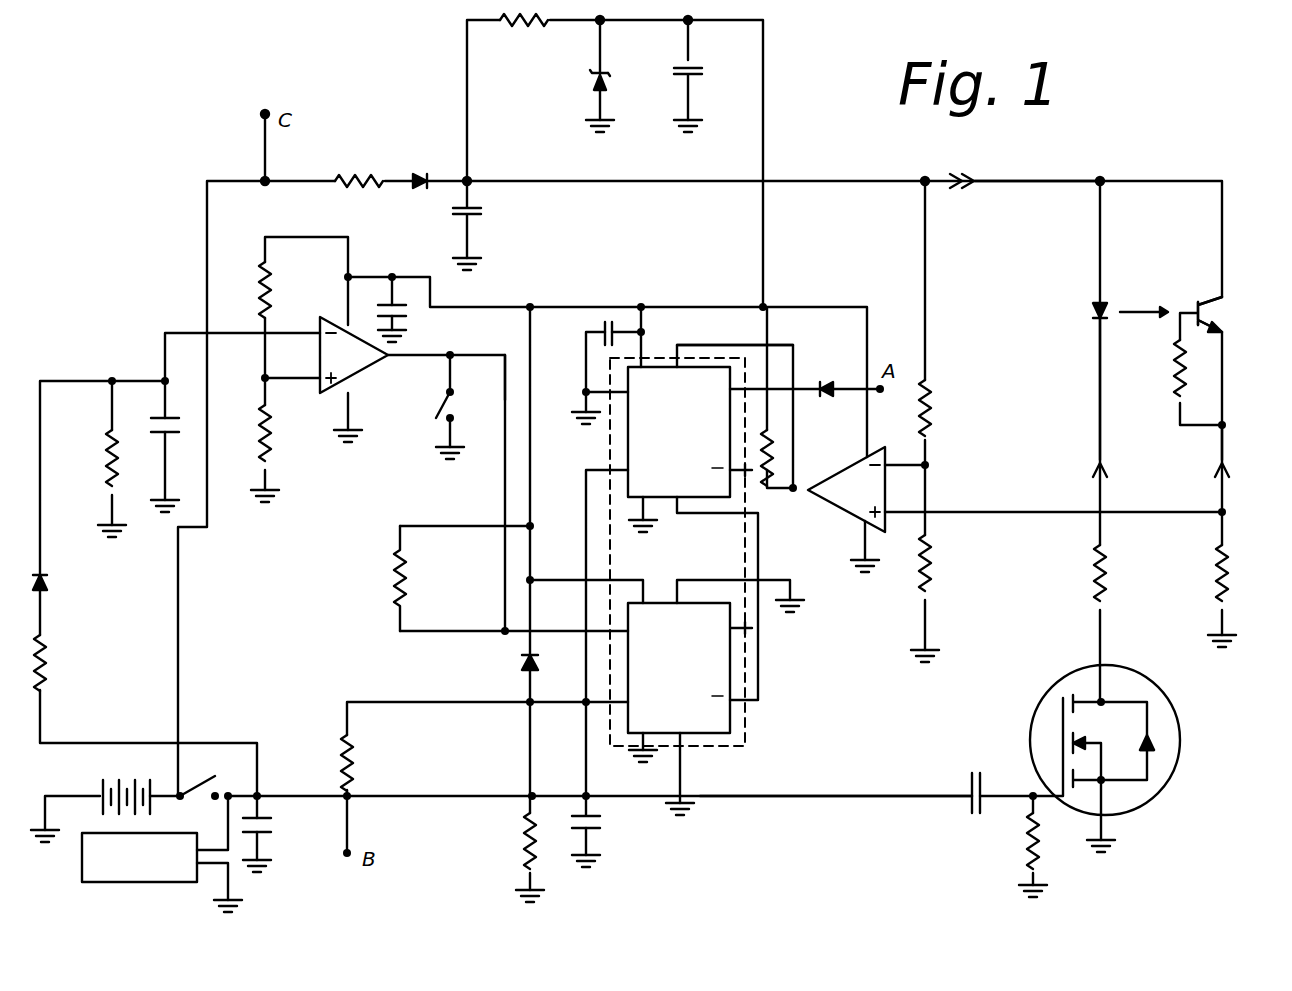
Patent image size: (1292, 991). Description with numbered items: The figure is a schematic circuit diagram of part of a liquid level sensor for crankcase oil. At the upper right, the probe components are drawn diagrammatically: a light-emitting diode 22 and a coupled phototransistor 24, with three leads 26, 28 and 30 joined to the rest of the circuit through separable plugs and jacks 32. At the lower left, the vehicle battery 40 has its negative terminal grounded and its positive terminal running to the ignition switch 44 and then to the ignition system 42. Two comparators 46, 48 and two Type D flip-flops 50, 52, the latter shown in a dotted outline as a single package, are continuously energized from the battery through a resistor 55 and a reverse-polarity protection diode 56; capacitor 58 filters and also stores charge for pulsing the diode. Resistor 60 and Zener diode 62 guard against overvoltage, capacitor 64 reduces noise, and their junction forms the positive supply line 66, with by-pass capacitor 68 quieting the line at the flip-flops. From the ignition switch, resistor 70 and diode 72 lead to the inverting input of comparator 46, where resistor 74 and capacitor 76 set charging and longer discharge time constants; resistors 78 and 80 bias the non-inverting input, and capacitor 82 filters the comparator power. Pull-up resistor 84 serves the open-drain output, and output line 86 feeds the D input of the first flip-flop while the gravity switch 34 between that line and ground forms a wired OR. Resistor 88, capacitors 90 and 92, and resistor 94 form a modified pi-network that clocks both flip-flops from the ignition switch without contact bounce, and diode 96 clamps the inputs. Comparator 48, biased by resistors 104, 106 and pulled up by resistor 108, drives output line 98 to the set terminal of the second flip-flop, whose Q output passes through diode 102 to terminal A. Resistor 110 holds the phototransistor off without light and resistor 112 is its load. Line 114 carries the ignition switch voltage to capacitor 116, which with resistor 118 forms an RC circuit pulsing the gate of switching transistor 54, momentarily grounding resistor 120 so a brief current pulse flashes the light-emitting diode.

The light-emitting diode 22 is at (1083, 305).
The phototransistor 24 is at (1226, 310).
The lead 26 is at (1225, 455).
The lead 28 is at (1098, 375).
The lead 30 is at (1017, 181).
The plugs and jacks 32 is at (985, 155).
The gravity switch 34 is at (455, 406).
The vehicle battery 40 is at (100, 790).
The ignition system 42 is at (132, 886).
The ignition switch 44 is at (205, 770).
The comparator 46 is at (360, 368).
The comparator 48 is at (835, 518).
The flip-flop 50 is at (690, 669).
The flip-flop 52 is at (681, 552).
The switching transistor 54 is at (1148, 688).
The resistor 55 is at (365, 178).
The diode 56 is at (427, 170).
The capacitor 58 is at (487, 213).
The resistor 60 is at (527, 40).
The Zener diode 62 is at (605, 72).
The capacitor 64 is at (702, 65).
The positive supply line 66 is at (770, 262).
The by-pass capacitor 68 is at (602, 320).
The resistor 70 is at (50, 668).
The diode 72 is at (50, 582).
The resistor 74 is at (106, 458).
The capacitor 76 is at (178, 422).
The resistor 78 is at (278, 285).
The resistor 80 is at (274, 440).
The capacitor 82 is at (410, 305).
The pull-up resistor 84 is at (382, 585).
The output line 86 is at (500, 350).
The resistor 88 is at (365, 767).
The capacitor 90 is at (275, 835).
The capacitor 92 is at (612, 824).
The resistor 94 is at (510, 840).
The diode 96 is at (508, 664).
The output line 98 is at (793, 345).
The diode 102 is at (830, 380).
The resistor 104 is at (940, 412).
The resistor 106 is at (943, 588).
The pull-up resistor 108 is at (785, 452).
The resistor 110 is at (1175, 375).
The resistor 112 is at (1235, 575).
The line 114 is at (1080, 800).
The capacitor 116 is at (955, 815).
The resistor 118 is at (1016, 850).
The resistor 120 is at (1114, 572).